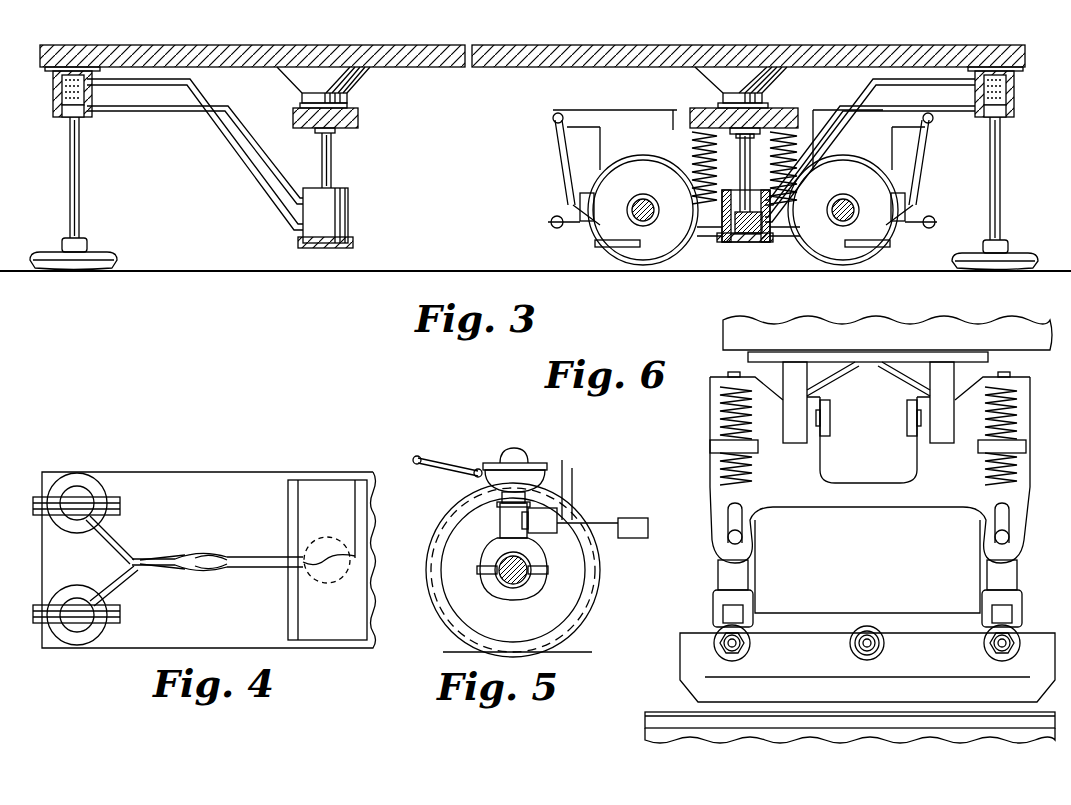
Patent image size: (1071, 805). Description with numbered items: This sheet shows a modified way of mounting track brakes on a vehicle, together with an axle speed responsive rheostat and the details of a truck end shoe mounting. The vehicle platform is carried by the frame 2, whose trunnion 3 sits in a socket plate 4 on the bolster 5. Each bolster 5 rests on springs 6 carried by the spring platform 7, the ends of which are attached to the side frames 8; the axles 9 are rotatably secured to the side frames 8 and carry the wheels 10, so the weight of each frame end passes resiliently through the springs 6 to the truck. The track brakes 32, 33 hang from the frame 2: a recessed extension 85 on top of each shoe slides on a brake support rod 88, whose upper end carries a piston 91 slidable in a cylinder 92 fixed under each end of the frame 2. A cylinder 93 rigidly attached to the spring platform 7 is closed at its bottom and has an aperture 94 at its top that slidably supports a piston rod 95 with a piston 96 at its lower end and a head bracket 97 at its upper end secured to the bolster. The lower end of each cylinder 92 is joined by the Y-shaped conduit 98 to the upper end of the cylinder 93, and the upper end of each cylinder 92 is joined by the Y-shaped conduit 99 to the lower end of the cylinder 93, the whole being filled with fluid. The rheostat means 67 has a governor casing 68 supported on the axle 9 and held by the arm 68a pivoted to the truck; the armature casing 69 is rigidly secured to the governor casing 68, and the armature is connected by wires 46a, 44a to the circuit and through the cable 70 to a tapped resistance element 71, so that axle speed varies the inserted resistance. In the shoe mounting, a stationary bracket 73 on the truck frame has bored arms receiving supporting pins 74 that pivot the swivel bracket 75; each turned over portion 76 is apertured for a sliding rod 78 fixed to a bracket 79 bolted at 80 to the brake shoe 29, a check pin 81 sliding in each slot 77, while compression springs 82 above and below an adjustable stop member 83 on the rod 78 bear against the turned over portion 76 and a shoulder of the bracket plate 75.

In FIG. 3, the frame 2 is at (808, 48).
In FIG. 4, the frame 2 is at (220, 472).
In FIG. 3, the trunnion 3 is at (300, 97).
In FIG. 3, the socket plate 4 is at (347, 107).
In FIG. 3, the bolster 5 is at (358, 118).
In FIG. 4, the bolster 5 is at (290, 492).
In FIG. 3, the spring 6 is at (773, 150).
In FIG. 3, the spring platform 7 is at (353, 247).
In FIG. 4, the spring platform 7 is at (300, 508).
In FIG. 3, the side frame 8 is at (630, 116).
In FIG. 6, the side frame 8 is at (940, 320).
In FIG. 3, the axle 9 is at (657, 211).
In FIG. 5, the axle 9 is at (513, 585).
In FIG. 3, the wheel 10 is at (667, 257).
In FIG. 5, the wheel 10 is at (513, 570).
In FIG. 6, the brake shoe 29 is at (685, 672).
In FIG. 3, the brake 32 is at (117, 259).
In FIG. 4, the brake 32 is at (120, 505).
In FIG. 3, the brake 33 is at (1030, 255).
In FIG. 5, the wire 44a is at (573, 490).
In FIG. 5, the wire 46a is at (563, 470).
In FIG. 5, the automatic rheostat means 67 is at (492, 450).
In FIG. 5, the governor casing 68 is at (525, 475).
In FIG. 5, the arm 68a is at (443, 476).
In FIG. 5, the armature casing 69 is at (545, 533).
In FIG. 5, the cable 70 is at (600, 523).
In FIG. 5, the tapped resistance element 71 is at (632, 518).
In FIG. 6, the stationary bracket 73 is at (748, 356).
In FIG. 6, the supporting pin 74 is at (832, 417).
In FIG. 6, the swivel bracket 75 is at (870, 483).
In FIG. 6, the turned over portion 76 is at (717, 394).
In FIG. 6, the longitudinal slot 77 is at (742, 516).
In FIG. 6, the sliding rod 78 is at (712, 382).
In FIG. 6, the bracket 79 is at (750, 597).
In FIG. 6, the bolt 80 is at (750, 643).
In FIG. 6, the check pin 81 is at (742, 538).
In FIG. 6, the compression spring 82 is at (717, 425).
In FIG. 6, the adjustable stop member 83 is at (710, 447).
In FIG. 3, the recessed extension 85 is at (87, 244).
In FIG. 3, the brake support rod 88 is at (1016, 165).
In FIG. 3, the piston 91 is at (58, 104).
In FIG. 3, the cylinder 92 is at (53, 82).
In FIG. 4, the cylinder 92 is at (77, 490).
In FIG. 3, the cylinder 93 is at (348, 212).
In FIG. 4, the cylinder 93 is at (330, 580).
In FIG. 3, the aperture 94 is at (750, 196).
In FIG. 3, the piston rod 95 is at (333, 160).
In FIG. 3, the piston 96 is at (738, 243).
In FIG. 3, the head bracket 97 is at (734, 134).
In FIG. 3, the Y-shaped conduit 98 is at (166, 112).
In FIG. 4, the Y-shaped conduit 98 is at (140, 556).
In FIG. 3, the Y-shaped conduit 99 is at (192, 82).
In FIG. 4, the Y-shaped conduit 99 is at (108, 550).